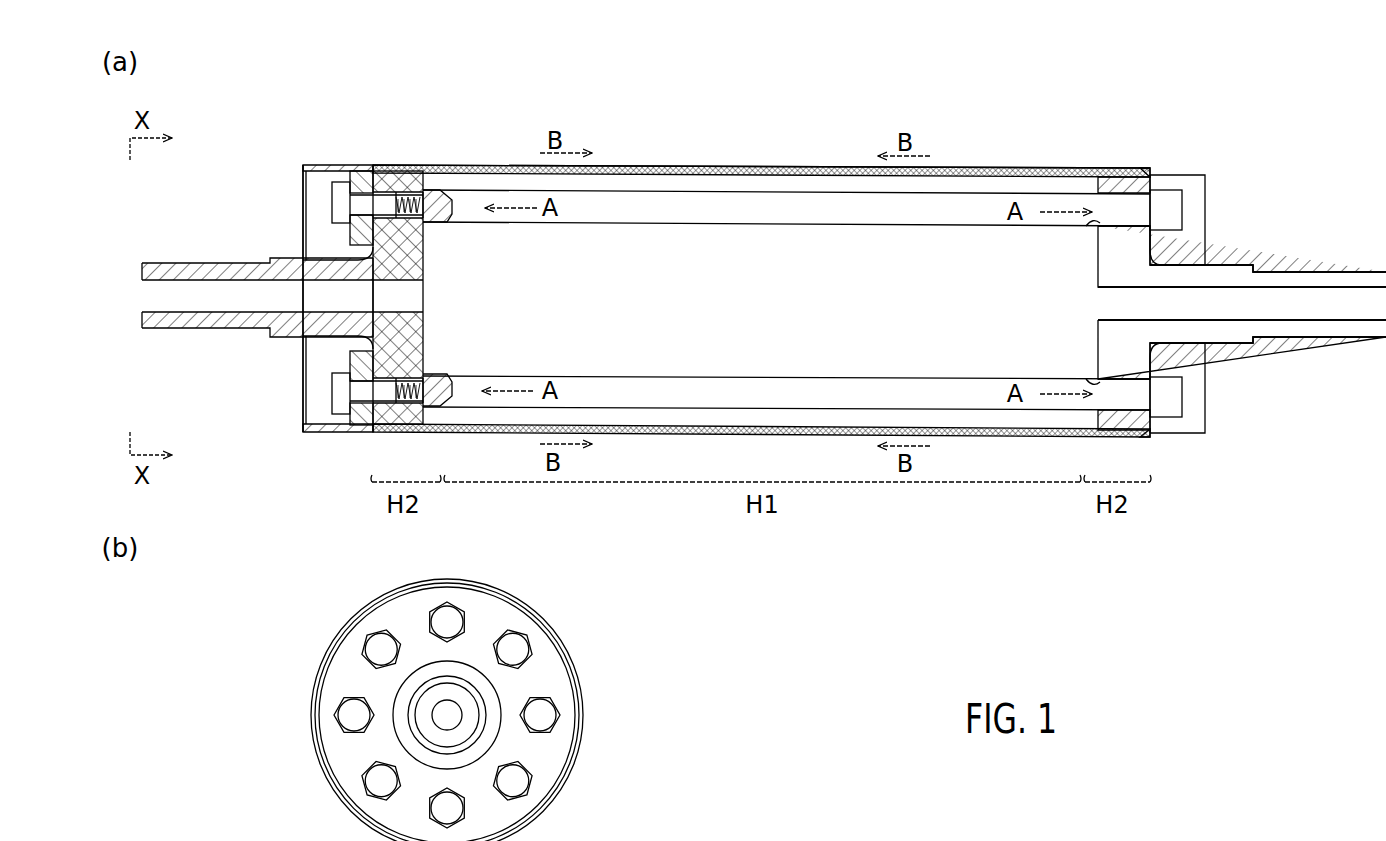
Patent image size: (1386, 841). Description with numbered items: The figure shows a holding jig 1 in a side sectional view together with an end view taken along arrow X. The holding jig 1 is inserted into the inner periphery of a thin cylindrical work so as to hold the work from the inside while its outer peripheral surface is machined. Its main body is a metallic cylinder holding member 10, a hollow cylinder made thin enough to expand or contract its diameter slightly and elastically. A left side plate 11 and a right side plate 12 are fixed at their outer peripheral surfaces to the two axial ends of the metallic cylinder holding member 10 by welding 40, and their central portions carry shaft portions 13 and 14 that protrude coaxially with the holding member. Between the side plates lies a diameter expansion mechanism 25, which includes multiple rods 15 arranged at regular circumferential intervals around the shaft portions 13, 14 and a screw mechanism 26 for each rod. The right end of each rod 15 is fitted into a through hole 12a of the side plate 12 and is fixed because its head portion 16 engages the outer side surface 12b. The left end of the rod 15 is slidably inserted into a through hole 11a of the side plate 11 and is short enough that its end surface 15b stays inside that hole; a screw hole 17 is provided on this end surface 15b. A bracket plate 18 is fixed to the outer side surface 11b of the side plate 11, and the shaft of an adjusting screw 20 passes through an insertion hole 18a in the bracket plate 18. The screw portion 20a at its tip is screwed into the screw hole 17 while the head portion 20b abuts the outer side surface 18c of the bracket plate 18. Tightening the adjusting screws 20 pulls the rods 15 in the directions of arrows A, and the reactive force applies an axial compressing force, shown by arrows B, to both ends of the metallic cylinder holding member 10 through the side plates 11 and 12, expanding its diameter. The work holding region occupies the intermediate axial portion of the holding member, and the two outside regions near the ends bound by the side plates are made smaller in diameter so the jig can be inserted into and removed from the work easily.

The holding jig 1 is at (1125, 158).
The metallic cylinder holding member 10 is at (958, 170).
The side plate 11 is at (417, 188).
The through hole 11a is at (432, 202).
The outer side surface 11b is at (398, 262).
The side plate 12 is at (1110, 178).
The through hole 12a is at (1097, 224).
The outer side surface 12b is at (1160, 257).
The shaft portion 13 is at (250, 332).
The shaft portion 14 is at (1288, 336).
The rod 15 is at (787, 195).
The end surface 15b is at (403, 228).
The head portion 16 is at (1185, 208).
The screw hole 17 is at (435, 197).
The bracket plate 18 is at (352, 178).
The insertion hole 18a is at (352, 176).
The outer side surface 18c is at (346, 240).
The adjusting screw 20 is at (330, 198).
The screw portion 20a is at (403, 196).
The head portion 20b is at (335, 190).
The diameter expansion mechanism 25 is at (668, 172).
The screw mechanism 26 is at (328, 222).
The welding 40 is at (380, 170).